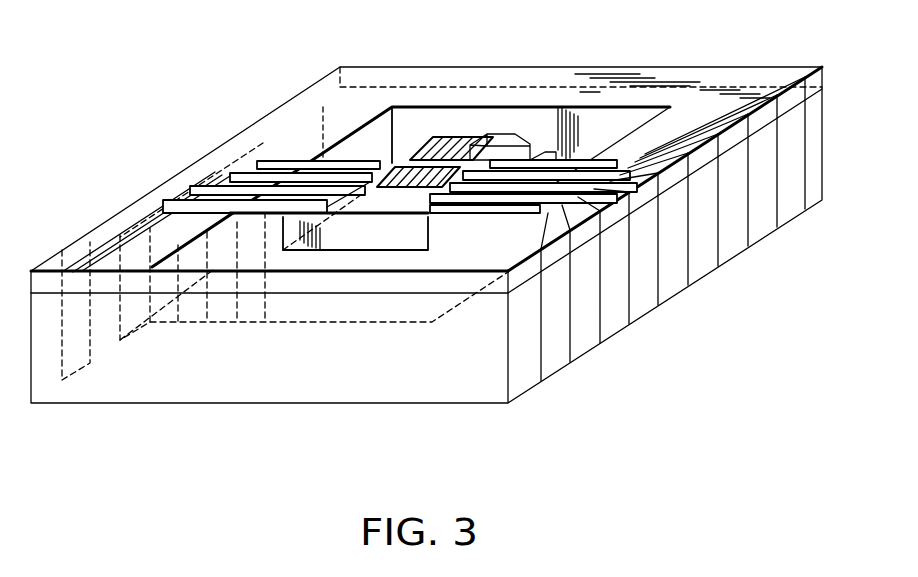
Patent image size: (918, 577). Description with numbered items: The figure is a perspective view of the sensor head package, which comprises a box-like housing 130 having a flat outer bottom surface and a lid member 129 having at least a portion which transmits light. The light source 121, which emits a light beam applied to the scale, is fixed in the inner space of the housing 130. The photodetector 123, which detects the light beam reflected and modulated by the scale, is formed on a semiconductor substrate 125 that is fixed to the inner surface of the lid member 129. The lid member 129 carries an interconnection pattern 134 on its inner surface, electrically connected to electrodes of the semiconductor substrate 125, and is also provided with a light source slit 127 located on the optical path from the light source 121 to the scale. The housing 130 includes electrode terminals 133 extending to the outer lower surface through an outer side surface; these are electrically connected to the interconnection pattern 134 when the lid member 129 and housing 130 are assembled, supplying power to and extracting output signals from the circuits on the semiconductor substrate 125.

The light source 121 is at (499, 132).
The photodetector 123 is at (383, 167).
The semiconductor substrate 125 is at (386, 214).
The light source slit 127 is at (455, 136).
The lid member 129 is at (662, 70).
The housing 130 is at (289, 393).
The electrode terminals 133 is at (684, 288).
The interconnection pattern 134 is at (514, 215).